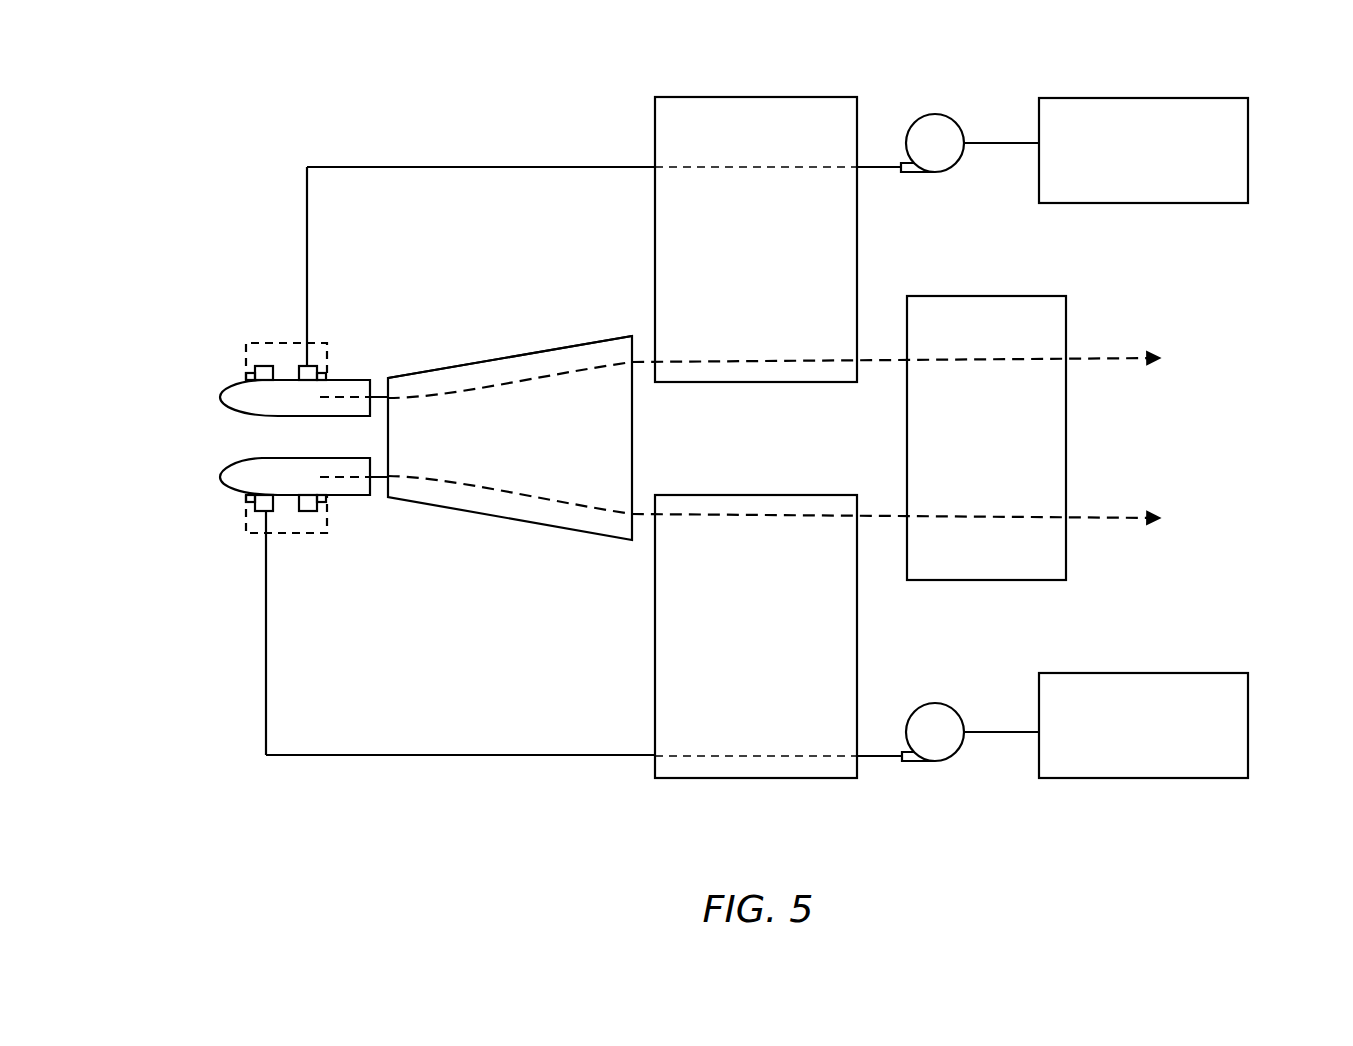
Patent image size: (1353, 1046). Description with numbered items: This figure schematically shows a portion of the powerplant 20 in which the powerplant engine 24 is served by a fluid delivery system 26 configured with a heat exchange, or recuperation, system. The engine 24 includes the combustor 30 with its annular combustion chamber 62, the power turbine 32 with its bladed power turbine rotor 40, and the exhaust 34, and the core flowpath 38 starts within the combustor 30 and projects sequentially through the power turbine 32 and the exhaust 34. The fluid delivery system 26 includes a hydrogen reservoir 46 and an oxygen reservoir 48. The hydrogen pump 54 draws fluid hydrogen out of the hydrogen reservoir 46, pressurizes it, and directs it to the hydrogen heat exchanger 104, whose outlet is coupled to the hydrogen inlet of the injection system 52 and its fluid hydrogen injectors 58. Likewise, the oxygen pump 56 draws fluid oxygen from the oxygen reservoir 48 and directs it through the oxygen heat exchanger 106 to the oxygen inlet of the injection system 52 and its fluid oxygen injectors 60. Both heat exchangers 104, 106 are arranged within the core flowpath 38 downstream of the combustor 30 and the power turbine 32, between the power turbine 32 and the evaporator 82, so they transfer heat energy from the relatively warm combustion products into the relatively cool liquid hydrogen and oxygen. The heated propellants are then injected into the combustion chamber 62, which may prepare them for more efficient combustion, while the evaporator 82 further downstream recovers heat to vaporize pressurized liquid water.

The powerplant 20 is at (280, 120).
The powerplant engine 24 is at (412, 570).
The powerplant fluid delivery system 26 is at (1191, 436).
The engine combustor 30 is at (210, 465).
The engine power turbine 32 is at (492, 352).
The engine exhaust 34 is at (1172, 298).
The core flowpath 38 is at (1122, 355).
The power turbine rotor 40 is at (528, 350).
The hydrogen reservoir 46 is at (1248, 712).
The oxygen reservoir 48 is at (1248, 130).
The injection system 52 is at (268, 343).
The hydrogen pump 54 is at (935, 762).
The oxygen pump 56 is at (935, 114).
The fluid hydrogen injector 58 is at (246, 375).
The fluid oxygen injector 60 is at (326, 375).
The combustion chamber 62 is at (308, 411).
The evaporator 82 is at (1066, 408).
The hydrogen heat exchanger 104 is at (857, 620).
The oxygen heat exchanger 106 is at (857, 235).